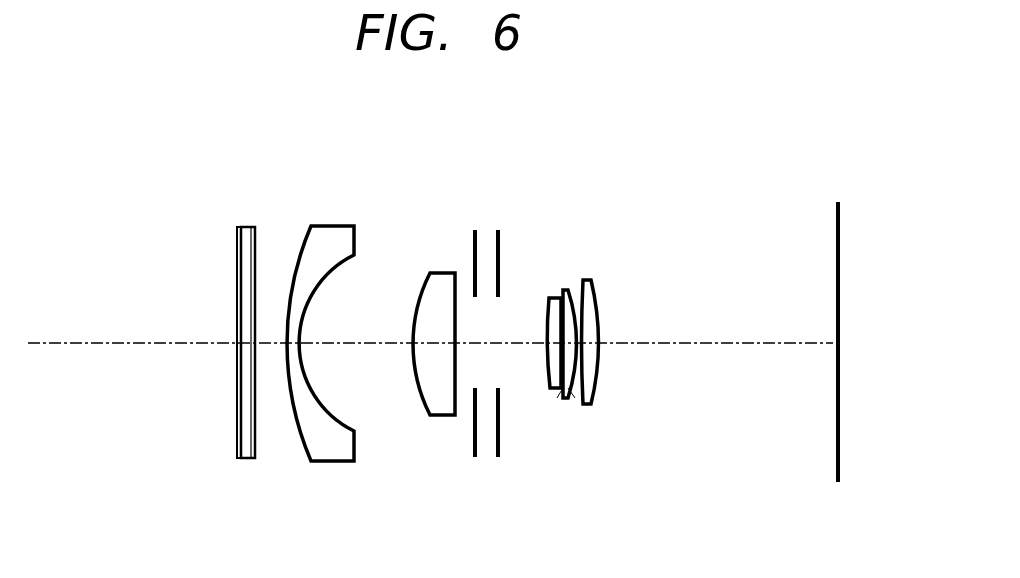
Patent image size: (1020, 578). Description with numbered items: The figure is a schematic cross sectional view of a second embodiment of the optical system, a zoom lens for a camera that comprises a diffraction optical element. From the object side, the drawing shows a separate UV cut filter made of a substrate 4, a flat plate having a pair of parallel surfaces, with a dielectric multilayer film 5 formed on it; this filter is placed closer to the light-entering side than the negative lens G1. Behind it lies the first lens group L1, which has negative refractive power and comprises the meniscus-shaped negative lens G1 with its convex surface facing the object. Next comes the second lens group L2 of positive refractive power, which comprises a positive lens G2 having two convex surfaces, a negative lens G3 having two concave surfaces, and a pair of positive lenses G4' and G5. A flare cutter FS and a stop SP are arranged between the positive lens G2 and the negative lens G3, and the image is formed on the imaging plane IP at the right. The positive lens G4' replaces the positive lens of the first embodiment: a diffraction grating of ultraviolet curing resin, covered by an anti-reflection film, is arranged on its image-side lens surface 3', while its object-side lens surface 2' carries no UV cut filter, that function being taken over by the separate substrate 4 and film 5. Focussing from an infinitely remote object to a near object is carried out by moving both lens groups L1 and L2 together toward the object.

The dielectric multilayer film 5 is at (240, 458).
The substrate 4 is at (250, 458).
The first lens group L1 is at (377, 149).
The second lens group L2 is at (618, 149).
The negative lens G1 is at (330, 230).
The positive lens G2 is at (440, 279).
The flare cutter FS is at (478, 231).
The stop SP is at (501, 237).
The negative lens G3 is at (553, 297).
The positive lens G4' is at (576, 304).
The positive lens G5 is at (594, 284).
The lens surface 2' is at (545, 433).
The lens surface 3' is at (590, 435).
The imaging plane IP is at (840, 218).